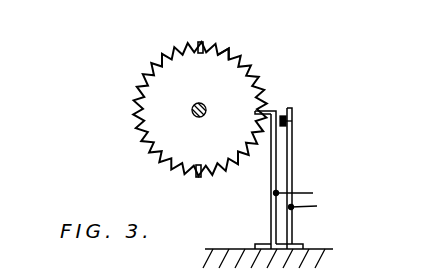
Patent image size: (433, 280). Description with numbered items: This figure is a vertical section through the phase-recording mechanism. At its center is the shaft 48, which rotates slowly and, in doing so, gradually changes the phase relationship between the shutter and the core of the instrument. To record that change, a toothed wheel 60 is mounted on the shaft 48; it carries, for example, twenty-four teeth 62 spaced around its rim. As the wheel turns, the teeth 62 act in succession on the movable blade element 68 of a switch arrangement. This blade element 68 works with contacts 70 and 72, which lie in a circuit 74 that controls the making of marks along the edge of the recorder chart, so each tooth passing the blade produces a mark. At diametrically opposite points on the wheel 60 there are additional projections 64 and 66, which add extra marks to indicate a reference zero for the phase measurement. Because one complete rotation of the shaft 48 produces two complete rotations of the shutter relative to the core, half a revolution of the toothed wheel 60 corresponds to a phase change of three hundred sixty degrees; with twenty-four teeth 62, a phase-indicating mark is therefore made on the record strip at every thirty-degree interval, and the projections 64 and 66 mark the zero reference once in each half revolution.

The shaft 48 is at (194, 116).
The toothed wheel 60 is at (237, 80).
The teeth 62 is at (226, 50).
The projection 64 is at (200, 41).
The projection 66 is at (199, 178).
The movable blade element 68 is at (262, 111).
The contact 70 is at (287, 131).
The contact 72 is at (290, 119).
The circuit 74 is at (306, 207).